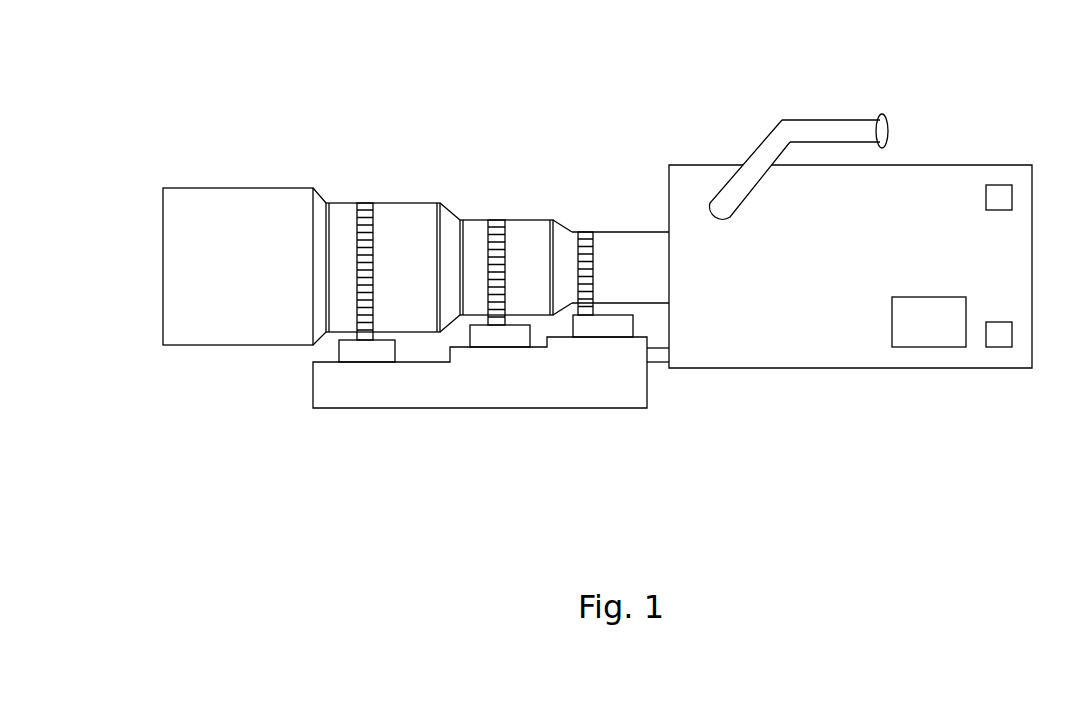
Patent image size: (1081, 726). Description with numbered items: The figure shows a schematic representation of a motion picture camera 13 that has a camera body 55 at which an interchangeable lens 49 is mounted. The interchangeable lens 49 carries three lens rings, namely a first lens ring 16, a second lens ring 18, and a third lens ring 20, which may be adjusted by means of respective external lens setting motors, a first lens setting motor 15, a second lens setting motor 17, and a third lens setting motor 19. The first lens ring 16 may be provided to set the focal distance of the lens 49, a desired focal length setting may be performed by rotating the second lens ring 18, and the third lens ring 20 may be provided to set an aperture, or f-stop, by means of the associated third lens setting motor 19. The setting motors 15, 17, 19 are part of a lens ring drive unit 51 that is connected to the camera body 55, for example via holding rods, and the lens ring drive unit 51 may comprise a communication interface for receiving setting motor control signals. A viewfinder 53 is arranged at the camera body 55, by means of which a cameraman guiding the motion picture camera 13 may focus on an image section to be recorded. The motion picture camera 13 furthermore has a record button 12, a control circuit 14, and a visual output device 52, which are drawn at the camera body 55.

The motion picture camera 13 is at (1003, 51).
The interchangeable lens 49 is at (501, 125).
The first lens ring 16 is at (368, 194).
The second lens ring 18 is at (501, 211).
The third lens ring 20 is at (588, 222).
The lens ring drive unit 51 is at (395, 388).
The first lens setting motor 15 is at (360, 353).
The second lens setting motor 17 is at (503, 337).
The third lens setting motor 19 is at (607, 335).
The camera body 55 is at (866, 271).
The viewfinder 53 is at (828, 130).
The record button 12 is at (1002, 195).
The visual output device 52 is at (1002, 330).
The control circuit 14 is at (923, 335).